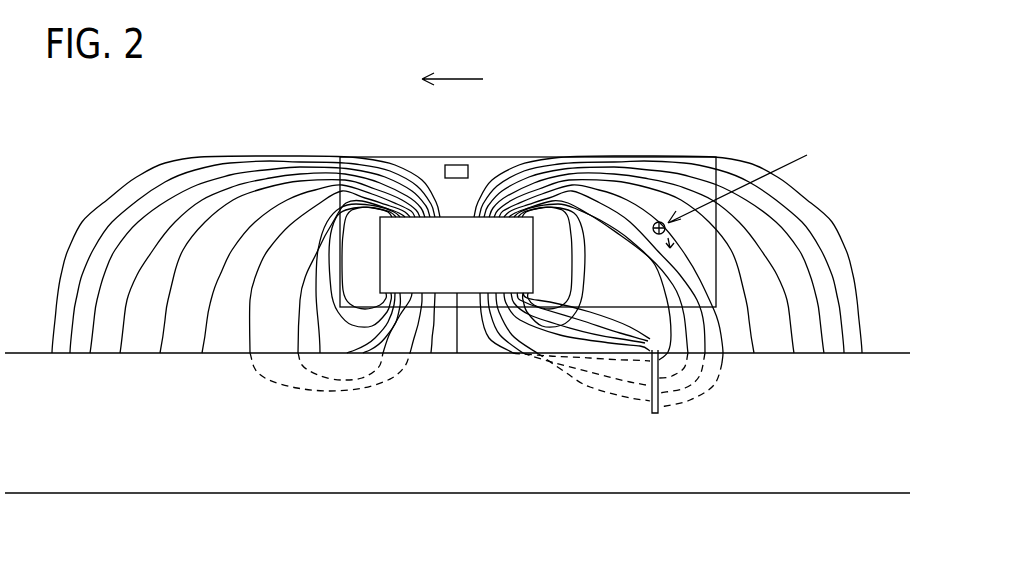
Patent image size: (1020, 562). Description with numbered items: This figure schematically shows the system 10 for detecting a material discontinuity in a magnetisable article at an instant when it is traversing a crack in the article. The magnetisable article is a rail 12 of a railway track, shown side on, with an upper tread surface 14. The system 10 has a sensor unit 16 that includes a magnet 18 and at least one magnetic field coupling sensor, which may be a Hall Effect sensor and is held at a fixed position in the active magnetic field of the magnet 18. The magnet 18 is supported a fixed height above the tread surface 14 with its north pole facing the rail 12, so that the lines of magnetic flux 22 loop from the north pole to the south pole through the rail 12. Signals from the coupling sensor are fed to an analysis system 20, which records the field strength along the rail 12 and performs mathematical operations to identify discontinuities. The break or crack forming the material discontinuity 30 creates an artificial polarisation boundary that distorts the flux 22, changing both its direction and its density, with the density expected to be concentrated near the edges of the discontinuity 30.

The system 10 is at (583, 111).
The rail 12 is at (170, 436).
The tread surface 14 is at (880, 352).
The sensor unit 16 is at (508, 157).
The magnet 18 is at (432, 222).
The analysis system 20 is at (458, 165).
The lines of magnetic flux 22 is at (847, 247).
The material discontinuity 30 is at (659, 397).